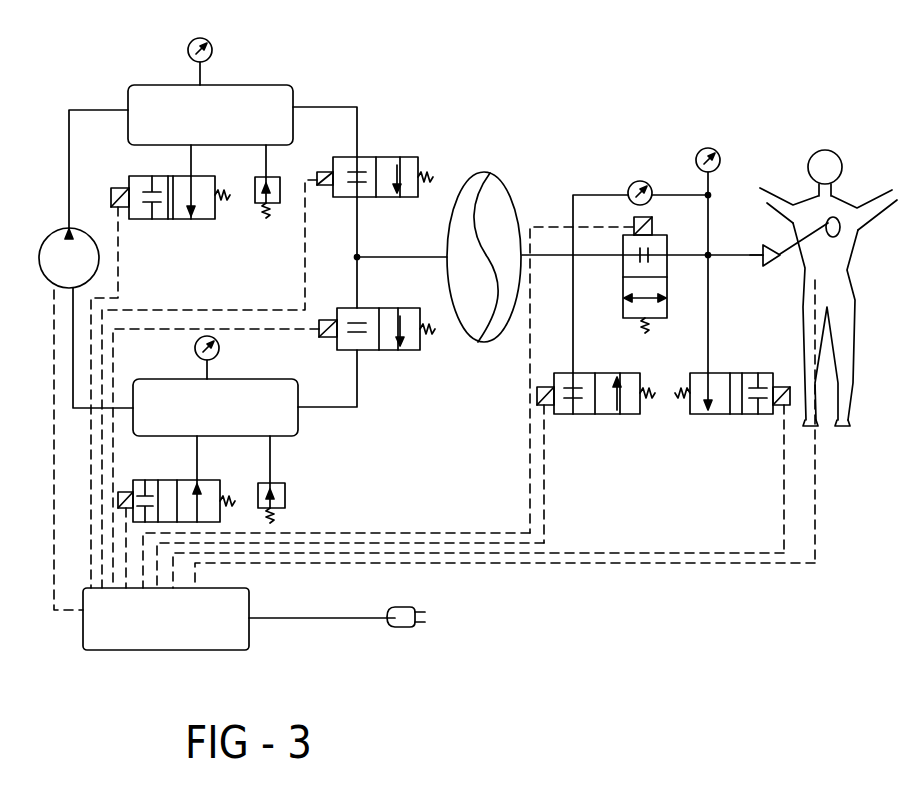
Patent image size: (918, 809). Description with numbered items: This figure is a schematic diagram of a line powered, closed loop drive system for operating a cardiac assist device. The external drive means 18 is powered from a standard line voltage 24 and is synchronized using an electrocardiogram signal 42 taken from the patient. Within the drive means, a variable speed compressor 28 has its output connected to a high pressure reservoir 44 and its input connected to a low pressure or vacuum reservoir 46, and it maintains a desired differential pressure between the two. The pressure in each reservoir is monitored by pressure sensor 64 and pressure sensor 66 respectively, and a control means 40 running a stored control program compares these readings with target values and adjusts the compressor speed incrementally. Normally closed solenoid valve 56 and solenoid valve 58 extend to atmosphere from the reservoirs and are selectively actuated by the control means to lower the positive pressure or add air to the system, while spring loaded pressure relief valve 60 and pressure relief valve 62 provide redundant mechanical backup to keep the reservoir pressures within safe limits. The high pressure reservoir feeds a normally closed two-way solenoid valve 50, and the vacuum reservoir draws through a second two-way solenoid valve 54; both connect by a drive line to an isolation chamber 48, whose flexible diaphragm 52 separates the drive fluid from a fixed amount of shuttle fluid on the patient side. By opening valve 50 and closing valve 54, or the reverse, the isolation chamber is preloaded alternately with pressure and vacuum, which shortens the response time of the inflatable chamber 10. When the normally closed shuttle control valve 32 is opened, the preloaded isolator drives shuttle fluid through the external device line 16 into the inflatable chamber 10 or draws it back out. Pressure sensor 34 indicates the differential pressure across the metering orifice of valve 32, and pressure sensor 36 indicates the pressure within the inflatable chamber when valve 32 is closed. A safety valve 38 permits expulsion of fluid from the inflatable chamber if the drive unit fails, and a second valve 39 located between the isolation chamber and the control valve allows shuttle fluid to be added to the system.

The inflatable chamber 10 is at (838, 216).
The external device line 16 is at (733, 253).
The line-powered drive means 18 is at (570, 580).
The line voltage 24 is at (340, 619).
The compressor 28 is at (87, 238).
The shuttle control valve 32 is at (668, 232).
The pressure sensor 34 is at (632, 184).
The pressure sensor 36 is at (708, 148).
The safety valve 38 is at (738, 415).
The second valve 39 is at (608, 415).
The control means 40 is at (143, 650).
The electrocardiogram signal 42 is at (717, 562).
The high pressure reservoir 44 is at (270, 85).
The low pressure reservoir 46 is at (298, 428).
The isolation chamber 48 is at (488, 173).
The two-way solenoid valve 50 is at (378, 157).
The flexible diaphragm 52 is at (480, 222).
The two-way solenoid valve 54 is at (393, 308).
The solenoid valve 56 is at (163, 219).
The solenoid valve 58 is at (175, 480).
The pressure relief valve 60 is at (253, 202).
The pressure relief valve 62 is at (285, 495).
The pressure sensor 64 is at (188, 48).
The pressure sensor 66 is at (220, 350).